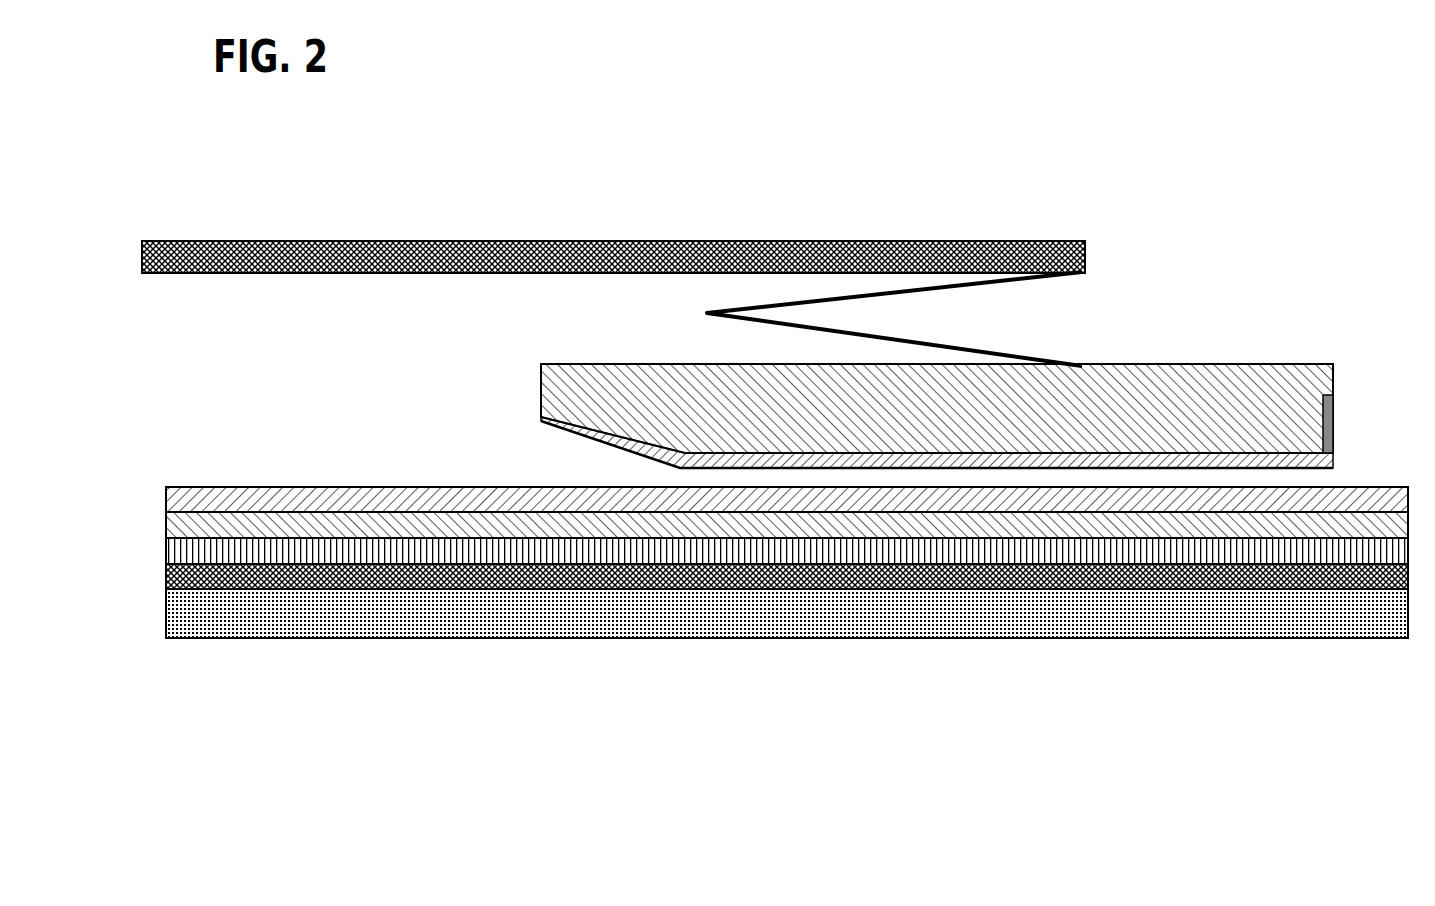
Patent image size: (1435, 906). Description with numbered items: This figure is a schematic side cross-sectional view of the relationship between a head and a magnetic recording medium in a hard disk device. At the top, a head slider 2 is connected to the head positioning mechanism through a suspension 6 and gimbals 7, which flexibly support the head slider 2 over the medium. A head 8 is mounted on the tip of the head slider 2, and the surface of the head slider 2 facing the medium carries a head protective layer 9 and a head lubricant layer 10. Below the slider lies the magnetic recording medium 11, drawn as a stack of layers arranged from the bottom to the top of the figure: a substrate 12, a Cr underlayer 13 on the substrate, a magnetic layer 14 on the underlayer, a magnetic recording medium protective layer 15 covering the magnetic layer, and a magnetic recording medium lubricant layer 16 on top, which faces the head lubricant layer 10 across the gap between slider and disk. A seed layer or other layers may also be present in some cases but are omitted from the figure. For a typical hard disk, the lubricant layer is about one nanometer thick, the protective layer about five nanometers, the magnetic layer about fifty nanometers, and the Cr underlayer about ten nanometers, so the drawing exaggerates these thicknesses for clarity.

The head slider 2 is at (1102, 398).
The suspension 6 is at (542, 240).
The gimbals 7 is at (830, 297).
The head 8 is at (1332, 365).
The head protective layer 9 is at (1157, 453).
The head lubricant layer 10 is at (1212, 465).
The magnetic recording medium 11 is at (448, 790).
The substrate 12 is at (1052, 610).
The Cr underlayer 13 is at (917, 590).
The magnetic layer 14 is at (805, 565).
The magnetic recording medium protective layer 15 is at (733, 522).
The magnetic recording medium lubricant layer 16 is at (657, 507).